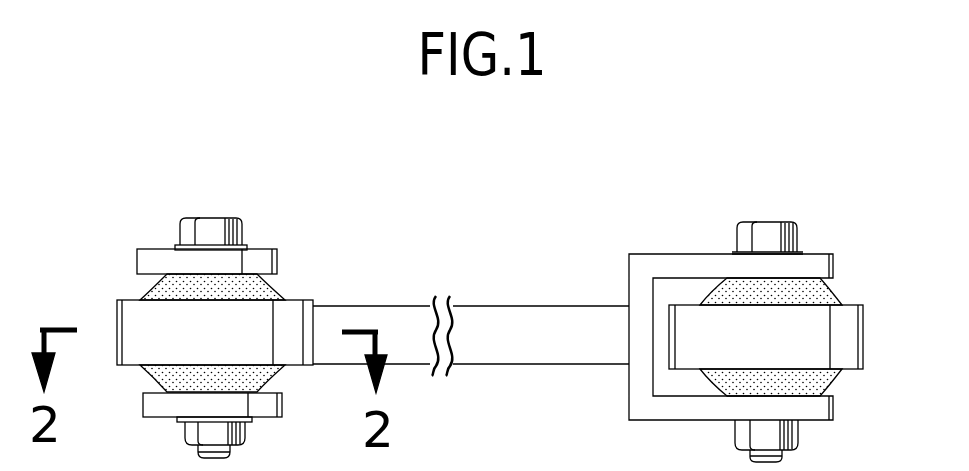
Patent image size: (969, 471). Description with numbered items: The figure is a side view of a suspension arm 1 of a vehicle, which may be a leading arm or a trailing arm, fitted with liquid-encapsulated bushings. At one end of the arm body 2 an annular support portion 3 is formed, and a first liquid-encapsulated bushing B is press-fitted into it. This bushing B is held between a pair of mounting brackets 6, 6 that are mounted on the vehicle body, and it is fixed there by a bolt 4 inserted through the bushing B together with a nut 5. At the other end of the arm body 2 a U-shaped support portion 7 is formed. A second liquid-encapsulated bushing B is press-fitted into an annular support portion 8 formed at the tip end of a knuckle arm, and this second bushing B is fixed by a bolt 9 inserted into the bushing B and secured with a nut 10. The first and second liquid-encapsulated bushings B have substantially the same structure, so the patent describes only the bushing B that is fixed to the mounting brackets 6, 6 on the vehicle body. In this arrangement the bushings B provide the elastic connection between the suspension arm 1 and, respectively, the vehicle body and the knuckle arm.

The suspension arm 1 is at (471, 315).
The arm body 2 is at (505, 353).
The annular support portion 3 is at (285, 348).
The bolt 4 is at (217, 227).
The nut 5 is at (227, 428).
The mounting brackets 6 is at (157, 255).
The U-shaped support portion 7 is at (682, 412).
The annular support portion 8 is at (857, 342).
The bolt 9 is at (770, 228).
The nut 10 is at (778, 435).
The liquid-encapsulated bushing B is at (287, 283).